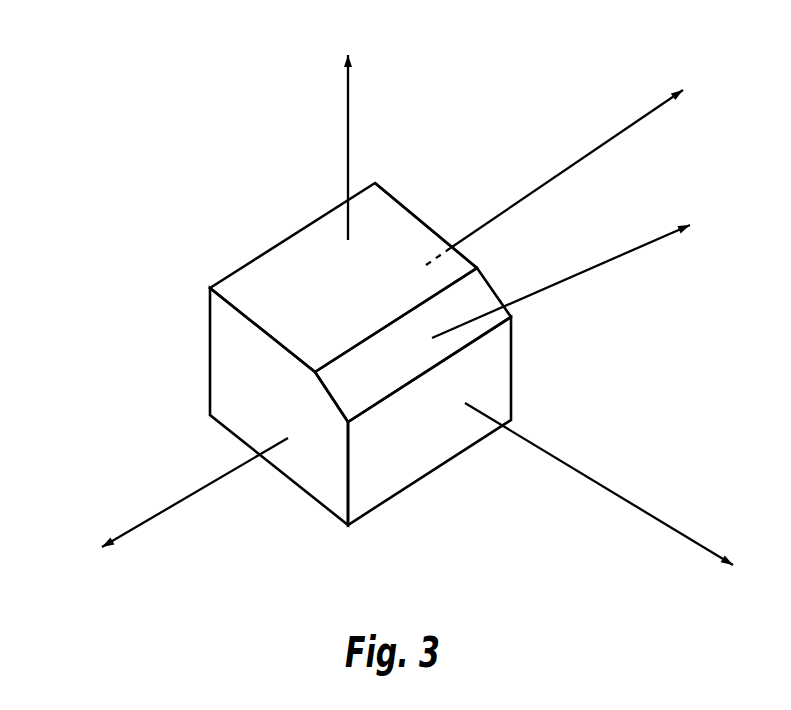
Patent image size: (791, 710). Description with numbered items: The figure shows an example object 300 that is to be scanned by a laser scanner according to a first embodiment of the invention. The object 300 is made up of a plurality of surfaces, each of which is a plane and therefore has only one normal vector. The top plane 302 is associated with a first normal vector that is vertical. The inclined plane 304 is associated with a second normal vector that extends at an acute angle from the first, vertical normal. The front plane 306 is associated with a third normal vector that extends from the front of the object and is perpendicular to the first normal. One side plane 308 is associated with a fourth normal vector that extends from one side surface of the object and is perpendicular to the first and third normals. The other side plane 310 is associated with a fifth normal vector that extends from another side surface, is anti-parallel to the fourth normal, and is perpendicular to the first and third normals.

The object 300 is at (125, 210).
The plane 302 is at (364, 302).
The plane 304 is at (413, 345).
The plane 306 is at (424, 436).
The plane 308 is at (271, 406).
The plane 310 is at (413, 208).